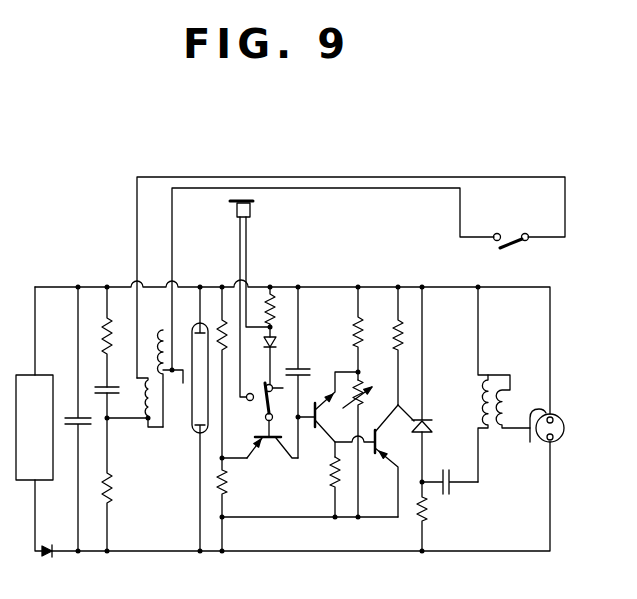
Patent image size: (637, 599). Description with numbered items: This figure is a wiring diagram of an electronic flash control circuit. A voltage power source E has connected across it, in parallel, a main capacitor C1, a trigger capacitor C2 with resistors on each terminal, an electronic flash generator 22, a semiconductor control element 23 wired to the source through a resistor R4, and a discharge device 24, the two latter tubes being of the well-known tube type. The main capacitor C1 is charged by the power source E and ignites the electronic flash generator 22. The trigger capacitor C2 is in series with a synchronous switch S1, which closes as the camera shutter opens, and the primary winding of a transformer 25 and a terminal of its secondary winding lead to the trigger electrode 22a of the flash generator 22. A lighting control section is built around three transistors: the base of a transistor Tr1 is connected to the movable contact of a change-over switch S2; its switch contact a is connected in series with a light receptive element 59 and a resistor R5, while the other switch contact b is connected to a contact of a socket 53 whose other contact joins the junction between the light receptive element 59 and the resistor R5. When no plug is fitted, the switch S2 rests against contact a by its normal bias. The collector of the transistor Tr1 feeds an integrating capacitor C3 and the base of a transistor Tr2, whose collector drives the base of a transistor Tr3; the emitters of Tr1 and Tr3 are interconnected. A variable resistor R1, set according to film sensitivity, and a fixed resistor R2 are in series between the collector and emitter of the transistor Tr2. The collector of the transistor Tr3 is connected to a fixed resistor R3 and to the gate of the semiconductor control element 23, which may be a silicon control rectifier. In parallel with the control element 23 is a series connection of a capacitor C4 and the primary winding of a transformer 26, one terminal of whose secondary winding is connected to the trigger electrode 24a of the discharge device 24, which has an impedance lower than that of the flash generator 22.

The electronic flash generator 22 is at (191, 425).
The trigger electrode 22a is at (183, 370).
The semiconductor control element 23 is at (428, 427).
The discharge device 24 is at (566, 429).
The trigger electrode 24a is at (553, 414).
The transformer 25 is at (150, 430).
The transformer 26 is at (491, 377).
The socket 53 is at (251, 207).
The light receptive element 59 is at (277, 339).
The voltage power source E is at (34, 419).
The main capacitor C1 is at (80, 427).
The trigger capacitor C2 is at (101, 383).
The integrating capacitor C3 is at (302, 370).
The capacitor C4 is at (451, 490).
The variable resistor R1 is at (362, 392).
The fixed resistor R2 is at (331, 485).
The fixed resistor R3 is at (390, 333).
The resistor R4 is at (420, 510).
The resistor R5 is at (272, 310).
The transistor Tr1 is at (273, 453).
The transistor Tr2 is at (319, 430).
The transistor Tr3 is at (380, 455).
The synchronous switch S1 is at (511, 245).
The change-over switch S2 is at (263, 402).
The switch contact a is at (281, 389).
The switch contact b is at (250, 381).